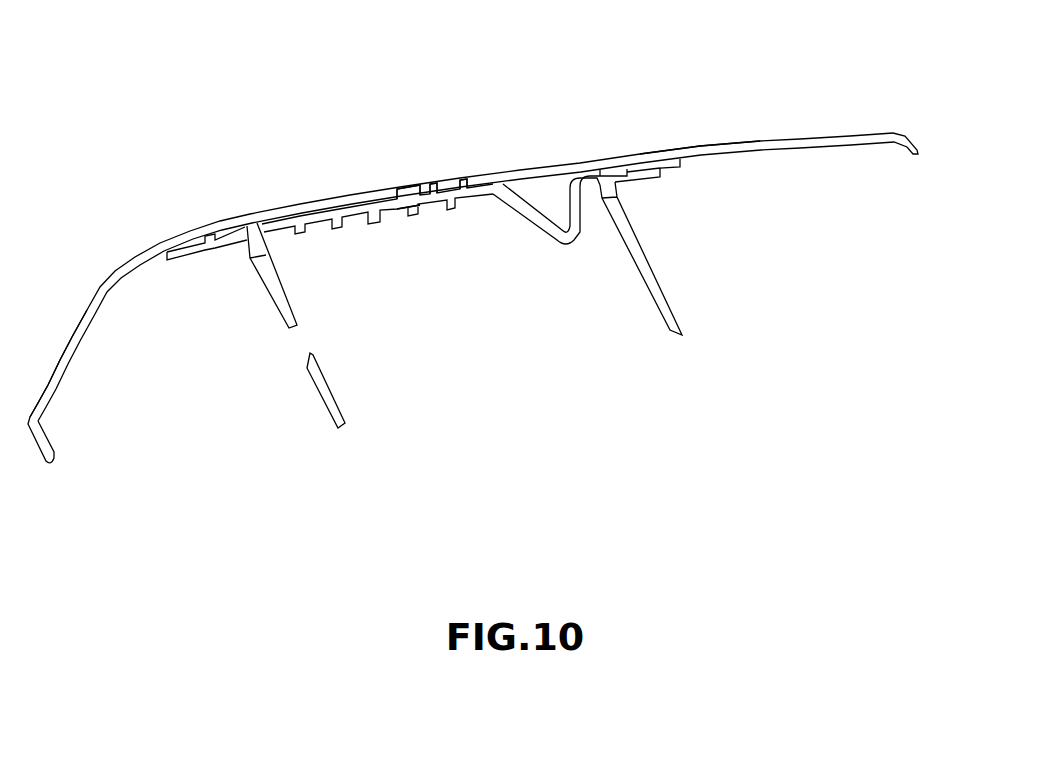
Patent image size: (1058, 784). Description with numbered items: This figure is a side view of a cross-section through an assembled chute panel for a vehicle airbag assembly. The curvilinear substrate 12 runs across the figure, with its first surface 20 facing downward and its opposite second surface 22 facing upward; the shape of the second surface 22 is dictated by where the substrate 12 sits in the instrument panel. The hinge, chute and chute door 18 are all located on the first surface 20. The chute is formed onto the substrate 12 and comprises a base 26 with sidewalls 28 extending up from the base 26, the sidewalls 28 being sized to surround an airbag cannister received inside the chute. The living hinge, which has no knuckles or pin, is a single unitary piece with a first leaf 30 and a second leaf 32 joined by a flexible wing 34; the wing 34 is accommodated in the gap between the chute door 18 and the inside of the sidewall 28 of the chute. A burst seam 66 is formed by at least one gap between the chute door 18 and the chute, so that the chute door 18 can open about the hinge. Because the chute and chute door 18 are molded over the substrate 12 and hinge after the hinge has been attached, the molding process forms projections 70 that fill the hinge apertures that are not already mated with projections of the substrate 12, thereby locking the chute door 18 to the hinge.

The substrate 12 is at (792, 148).
The second surface 22 is at (735, 144).
The first surface 20 is at (87, 333).
The base 26 is at (193, 250).
The burst seam 66 is at (262, 228).
The chute door 18 is at (310, 220).
The second leaf 32 is at (405, 195).
The projections 70 is at (463, 192).
The wing 34 is at (567, 242).
The first leaf 30 is at (612, 170).
The sidewall 28 is at (678, 314).